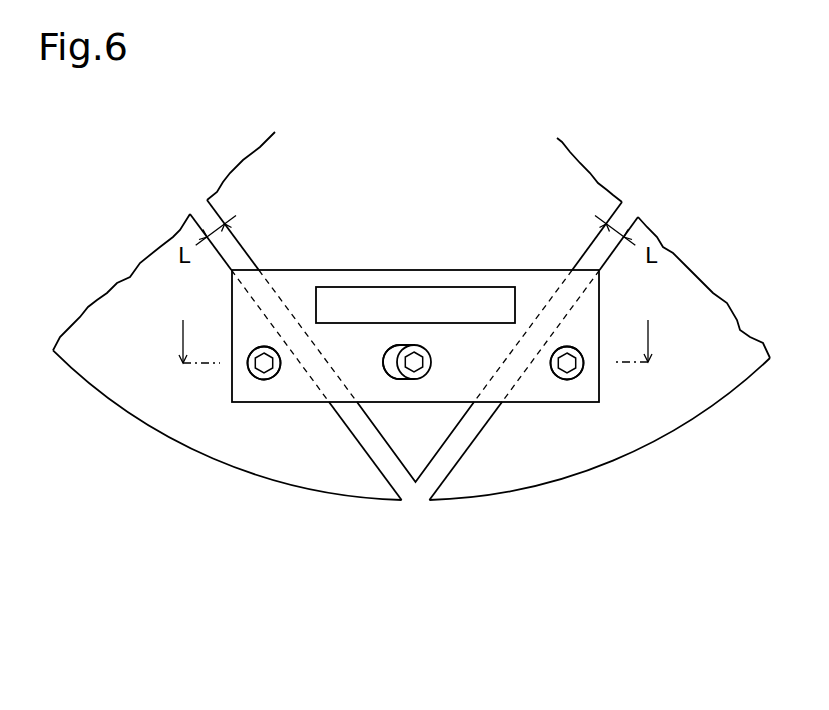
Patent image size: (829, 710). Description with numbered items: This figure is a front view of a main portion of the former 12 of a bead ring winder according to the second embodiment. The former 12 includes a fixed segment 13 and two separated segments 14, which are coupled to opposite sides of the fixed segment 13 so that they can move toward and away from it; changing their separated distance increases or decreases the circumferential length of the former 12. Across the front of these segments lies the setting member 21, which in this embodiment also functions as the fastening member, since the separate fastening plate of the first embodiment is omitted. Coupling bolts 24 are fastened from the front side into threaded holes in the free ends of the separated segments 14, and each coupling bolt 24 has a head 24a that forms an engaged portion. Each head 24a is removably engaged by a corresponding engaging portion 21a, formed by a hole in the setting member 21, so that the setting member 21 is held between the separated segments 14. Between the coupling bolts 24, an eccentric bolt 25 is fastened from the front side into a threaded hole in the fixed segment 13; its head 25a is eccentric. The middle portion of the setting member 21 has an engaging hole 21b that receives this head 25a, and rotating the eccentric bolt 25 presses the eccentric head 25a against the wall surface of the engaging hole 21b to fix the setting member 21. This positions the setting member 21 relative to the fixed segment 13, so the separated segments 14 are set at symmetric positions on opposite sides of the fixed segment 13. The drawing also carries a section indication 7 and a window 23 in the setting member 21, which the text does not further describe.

The section line of FIG. 7 is at (418, 328).
The former 12 is at (140, 423).
The fixed segment 13 is at (590, 173).
The separated segments 14 is at (275, 450).
The setting member 21 is at (348, 277).
The engaging portion 21a is at (261, 375).
The engaging hole 21b is at (431, 355).
The window opening 23 is at (423, 292).
The coupling bolts 24 is at (248, 368).
The head 24a is at (273, 378).
The eccentric bolt 25 is at (387, 357).
The head 25a is at (410, 372).